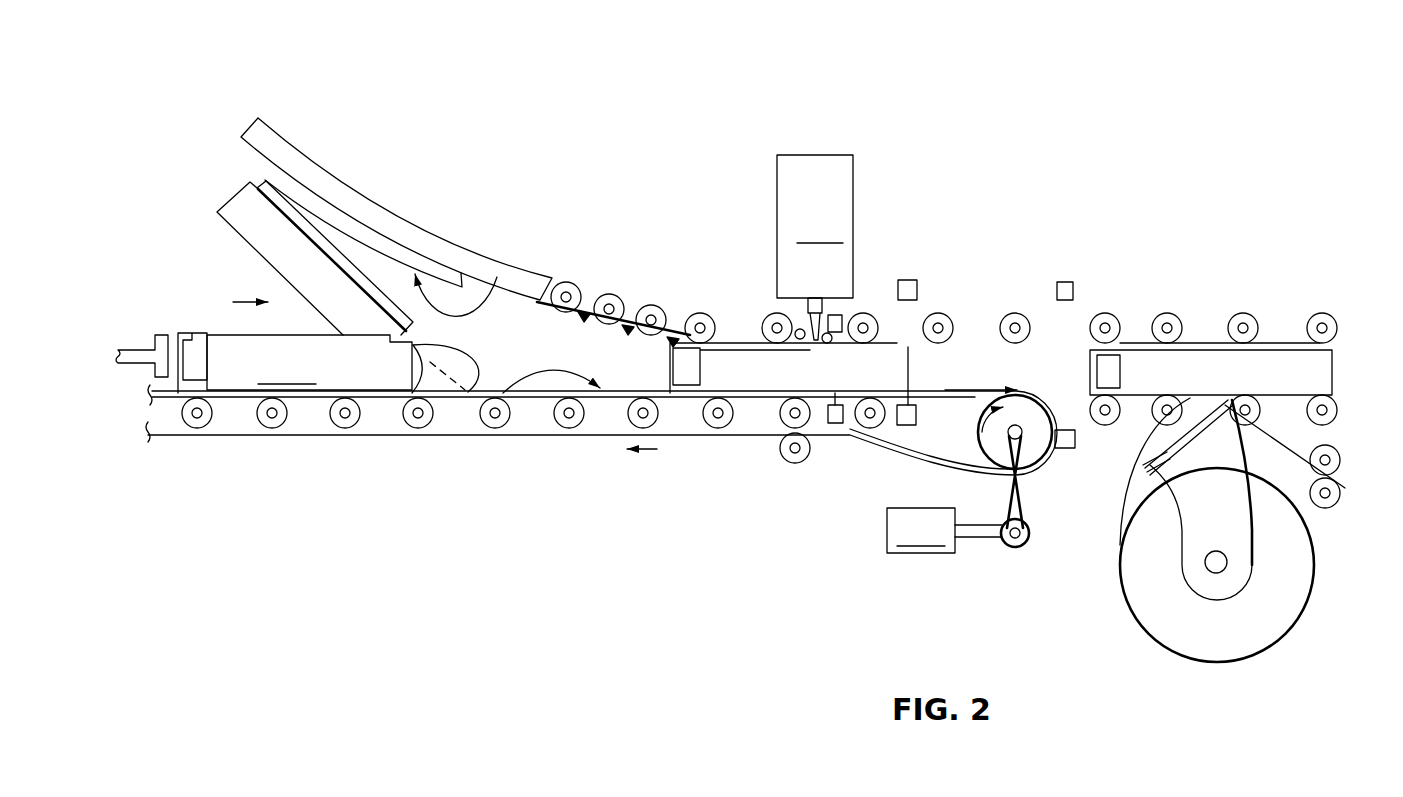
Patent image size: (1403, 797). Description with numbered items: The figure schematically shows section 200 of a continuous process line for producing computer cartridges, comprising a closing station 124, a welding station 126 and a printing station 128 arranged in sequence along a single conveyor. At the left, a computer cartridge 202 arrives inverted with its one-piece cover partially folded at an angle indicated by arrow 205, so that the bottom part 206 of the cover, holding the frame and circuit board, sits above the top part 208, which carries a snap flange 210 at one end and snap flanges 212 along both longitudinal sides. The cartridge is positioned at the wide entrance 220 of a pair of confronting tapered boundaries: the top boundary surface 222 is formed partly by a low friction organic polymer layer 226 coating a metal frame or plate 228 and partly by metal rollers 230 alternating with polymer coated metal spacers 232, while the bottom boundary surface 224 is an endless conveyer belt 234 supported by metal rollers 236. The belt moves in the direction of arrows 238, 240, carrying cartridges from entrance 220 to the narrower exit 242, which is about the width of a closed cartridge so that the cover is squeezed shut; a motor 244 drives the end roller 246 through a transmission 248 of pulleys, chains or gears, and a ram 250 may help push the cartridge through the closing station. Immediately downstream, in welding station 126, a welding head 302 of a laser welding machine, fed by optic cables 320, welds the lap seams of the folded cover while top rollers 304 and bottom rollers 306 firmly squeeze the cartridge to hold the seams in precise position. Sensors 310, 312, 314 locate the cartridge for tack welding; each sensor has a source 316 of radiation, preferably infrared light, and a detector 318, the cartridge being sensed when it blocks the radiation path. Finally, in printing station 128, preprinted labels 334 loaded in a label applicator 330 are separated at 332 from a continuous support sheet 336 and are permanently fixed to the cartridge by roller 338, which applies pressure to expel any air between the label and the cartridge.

The closing station 124 is at (606, 153).
The welding station 126 is at (762, 614).
The printing station 128 is at (1237, 132).
The section of continuous process line 200 is at (300, 552).
The computer cartridge 202 is at (196, 213).
The arrow indicating partial fold angle 205 is at (434, 359).
The bottom part of cover 206 is at (247, 210).
The top part of cover 208 is at (309, 362).
The snap flange 210 is at (188, 332).
The snap flanges 212 is at (232, 330).
The entrance 220 is at (258, 92).
The top boundary surface 222 is at (510, 272).
The bottom boundary surface 224 is at (470, 436).
The low friction organic polymer layer 226 is at (327, 202).
The metal frame or plate 228 is at (278, 145).
The metal rollers 230 is at (574, 284).
The polymer coated metal spacers 232 is at (588, 308).
The endless conveyer belt 234 is at (617, 393).
The metal rollers 236 is at (266, 418).
The arrow 238 is at (958, 390).
The arrow 240 is at (657, 449).
The narrower exit 242 is at (653, 548).
The motor 244 is at (944, 530).
The end roller 246 is at (1022, 465).
The transmission 248 is at (1010, 487).
The ram 250 is at (140, 348).
The welding head 302 is at (815, 226).
The top rollers 304 is at (777, 313).
The bottom rollers 306 is at (812, 400).
The sensor 310 is at (853, 312).
The sensor 312 is at (917, 285).
The sensor 314 is at (1078, 272).
The source of radiation 316 is at (1065, 450).
The detector 318 is at (1092, 348).
The optic cables 320 is at (810, 322).
The label applicator 330 is at (1180, 653).
The label separation point 332 is at (1197, 393).
The labels 334 is at (1318, 400).
The continuous support sheet 336 is at (1250, 420).
The roller 338 is at (1336, 412).